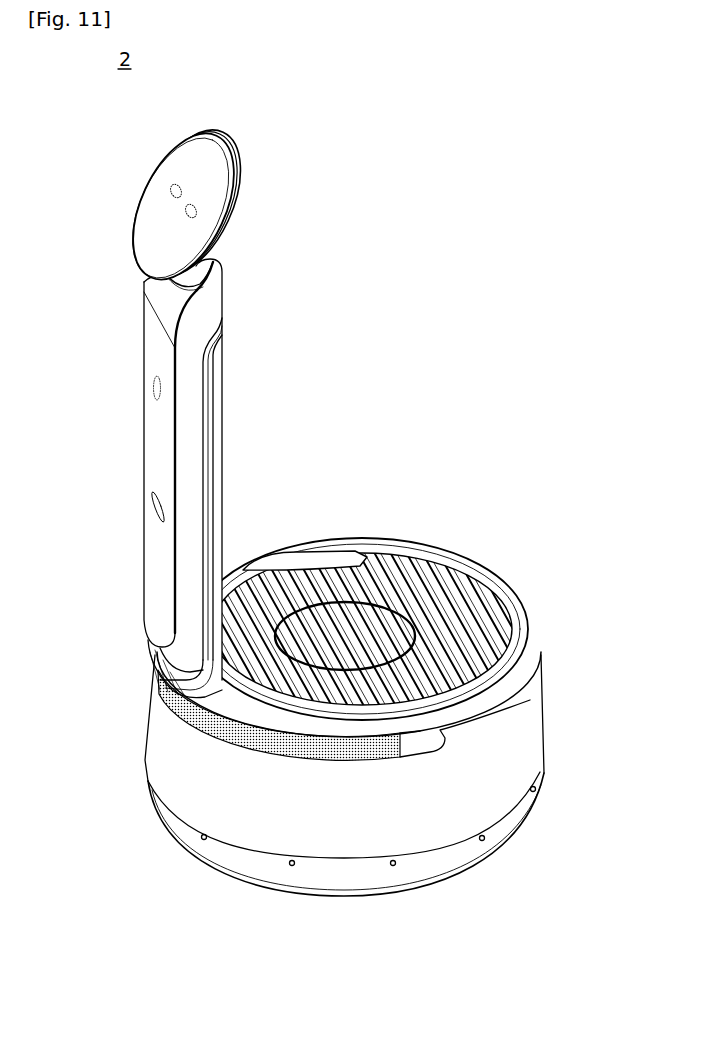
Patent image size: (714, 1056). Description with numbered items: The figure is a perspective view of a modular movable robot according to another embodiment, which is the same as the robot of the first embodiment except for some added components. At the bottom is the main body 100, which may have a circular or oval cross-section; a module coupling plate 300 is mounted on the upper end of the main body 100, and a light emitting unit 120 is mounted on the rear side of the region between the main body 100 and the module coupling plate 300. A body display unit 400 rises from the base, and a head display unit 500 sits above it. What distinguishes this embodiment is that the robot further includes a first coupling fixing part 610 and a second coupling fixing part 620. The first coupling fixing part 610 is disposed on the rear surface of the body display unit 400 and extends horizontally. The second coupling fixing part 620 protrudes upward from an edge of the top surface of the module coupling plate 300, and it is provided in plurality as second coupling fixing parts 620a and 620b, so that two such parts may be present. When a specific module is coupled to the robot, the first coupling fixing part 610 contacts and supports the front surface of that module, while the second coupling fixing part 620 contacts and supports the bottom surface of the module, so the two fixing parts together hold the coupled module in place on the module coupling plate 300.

The main body 100 is at (518, 736).
The light emitting unit 120 is at (532, 676).
The module coupling plate 300 is at (527, 618).
The body display unit 400 is at (197, 320).
The head display unit 500 is at (158, 218).
The first coupling fixing part 610 is at (225, 400).
The second coupling fixing part 620 is at (372, 561).
The second coupling fixing part 620a is at (318, 540).
The second coupling fixing part 620b is at (395, 548).